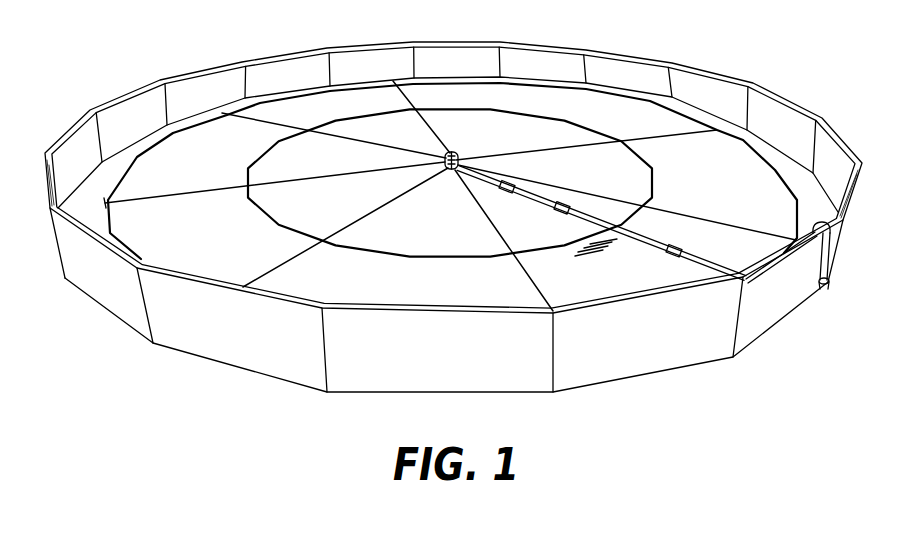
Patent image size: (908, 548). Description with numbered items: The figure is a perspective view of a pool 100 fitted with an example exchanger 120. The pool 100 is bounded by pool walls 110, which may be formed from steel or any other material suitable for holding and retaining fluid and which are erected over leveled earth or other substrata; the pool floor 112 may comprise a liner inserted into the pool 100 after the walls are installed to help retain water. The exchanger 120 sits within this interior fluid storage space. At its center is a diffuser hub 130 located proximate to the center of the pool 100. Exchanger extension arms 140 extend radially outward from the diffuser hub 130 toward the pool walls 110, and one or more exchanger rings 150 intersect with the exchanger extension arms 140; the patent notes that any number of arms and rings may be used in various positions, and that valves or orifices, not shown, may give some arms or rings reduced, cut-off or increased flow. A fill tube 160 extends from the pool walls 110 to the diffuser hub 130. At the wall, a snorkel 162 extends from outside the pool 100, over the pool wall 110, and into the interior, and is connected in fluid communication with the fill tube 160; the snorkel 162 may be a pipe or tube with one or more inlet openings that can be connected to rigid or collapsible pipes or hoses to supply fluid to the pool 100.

The pool 100 is at (78, 61).
The pool walls 110 is at (109, 304).
The pool floor 112 is at (637, 271).
The exchanger 120 is at (233, 150).
The diffuser hub 130 is at (446, 157).
The exchanger extension arms 140 is at (561, 194).
The exchanger rings 150 is at (651, 167).
The fill tube 160 is at (641, 236).
The snorkel 162 is at (826, 254).